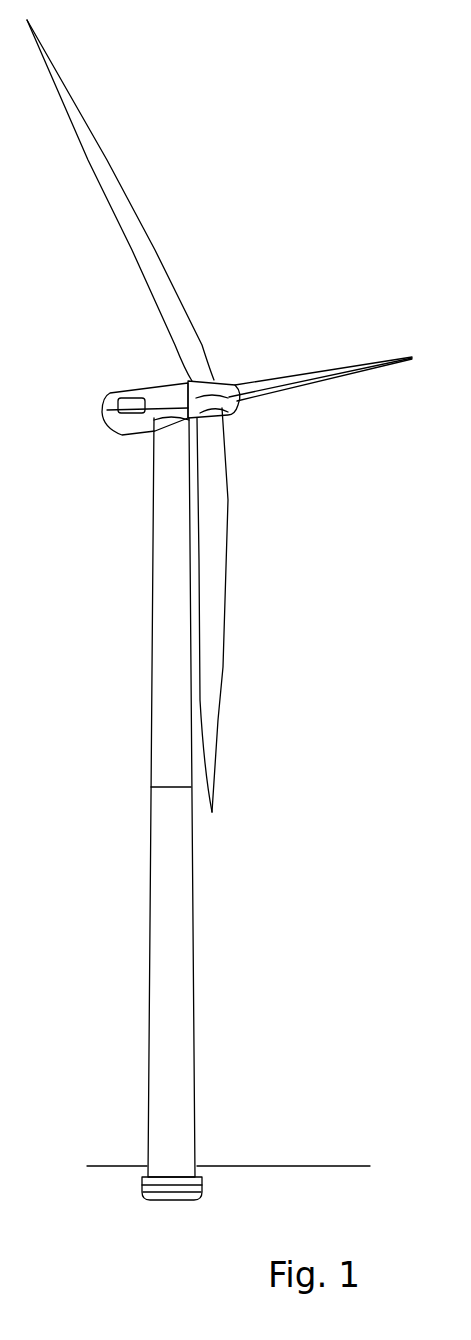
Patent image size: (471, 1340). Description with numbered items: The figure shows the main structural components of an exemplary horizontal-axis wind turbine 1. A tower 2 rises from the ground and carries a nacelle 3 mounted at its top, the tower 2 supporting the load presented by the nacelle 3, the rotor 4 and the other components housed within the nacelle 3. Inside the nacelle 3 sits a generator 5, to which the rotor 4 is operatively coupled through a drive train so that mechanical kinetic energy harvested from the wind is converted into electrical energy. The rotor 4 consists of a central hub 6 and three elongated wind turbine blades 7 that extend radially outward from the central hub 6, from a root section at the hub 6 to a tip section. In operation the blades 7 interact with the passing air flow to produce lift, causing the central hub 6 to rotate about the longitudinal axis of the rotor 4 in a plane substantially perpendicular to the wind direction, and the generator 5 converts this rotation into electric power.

The wind turbine 1 is at (331, 200).
The tower 2 is at (153, 562).
The nacelle 3 is at (130, 381).
The rotor 4 is at (223, 373).
The generator 5 is at (102, 407).
The central hub 6 is at (233, 404).
The wind turbine blades 7 is at (102, 173).